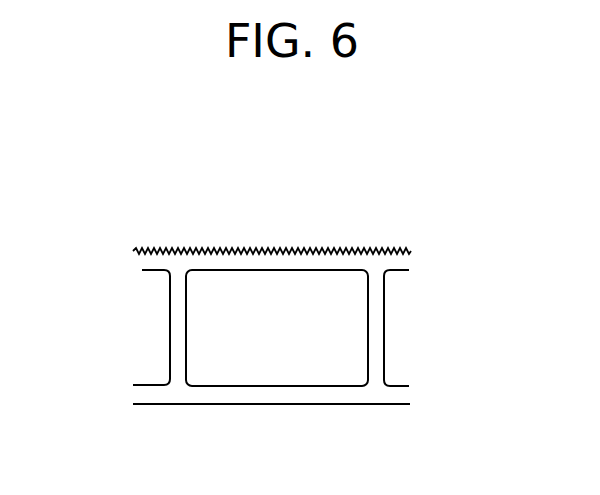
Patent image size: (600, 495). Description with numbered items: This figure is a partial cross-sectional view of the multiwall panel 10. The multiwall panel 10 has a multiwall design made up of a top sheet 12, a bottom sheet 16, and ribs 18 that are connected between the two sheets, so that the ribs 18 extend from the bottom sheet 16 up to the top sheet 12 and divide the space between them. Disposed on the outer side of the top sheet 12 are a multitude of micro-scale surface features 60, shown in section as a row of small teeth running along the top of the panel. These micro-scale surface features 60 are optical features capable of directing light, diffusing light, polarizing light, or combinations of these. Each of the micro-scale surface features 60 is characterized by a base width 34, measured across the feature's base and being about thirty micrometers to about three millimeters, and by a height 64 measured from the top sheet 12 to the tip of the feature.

The multiwall panel 10 is at (245, 158).
The top sheet 12 is at (254, 266).
The bottom sheet 16 is at (276, 395).
The ribs 18 is at (375, 340).
The base width 34 is at (232, 221).
The micro-scale surface features 60 is at (192, 250).
The height 64 is at (122, 220).